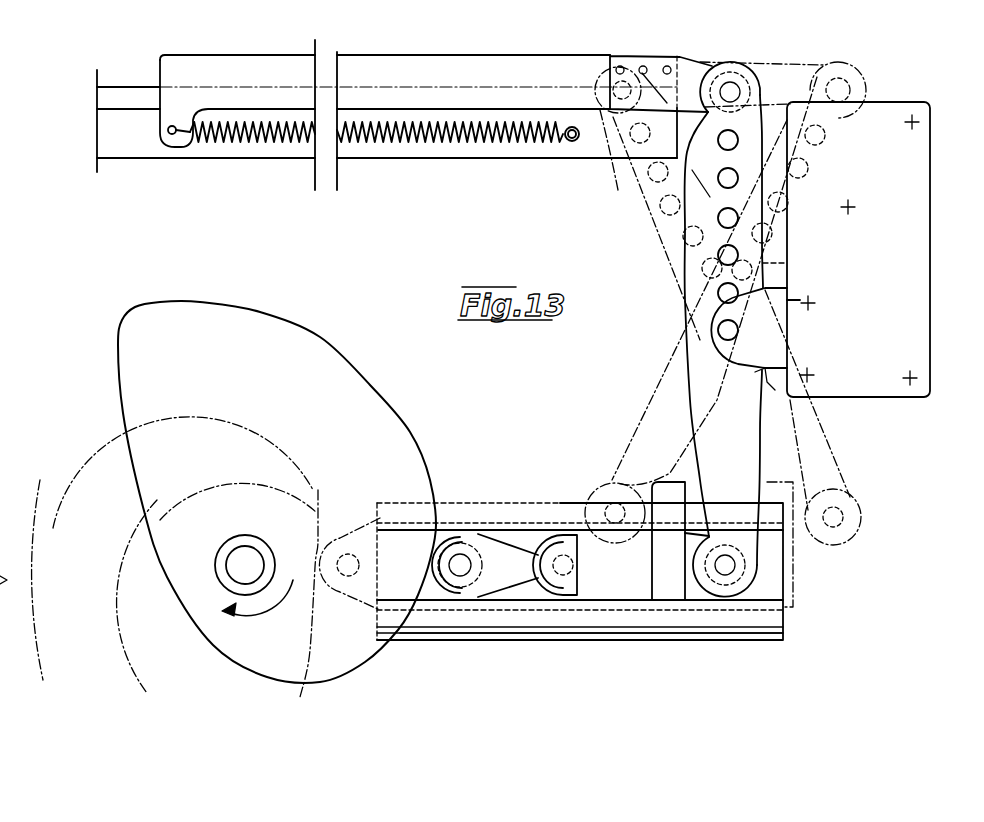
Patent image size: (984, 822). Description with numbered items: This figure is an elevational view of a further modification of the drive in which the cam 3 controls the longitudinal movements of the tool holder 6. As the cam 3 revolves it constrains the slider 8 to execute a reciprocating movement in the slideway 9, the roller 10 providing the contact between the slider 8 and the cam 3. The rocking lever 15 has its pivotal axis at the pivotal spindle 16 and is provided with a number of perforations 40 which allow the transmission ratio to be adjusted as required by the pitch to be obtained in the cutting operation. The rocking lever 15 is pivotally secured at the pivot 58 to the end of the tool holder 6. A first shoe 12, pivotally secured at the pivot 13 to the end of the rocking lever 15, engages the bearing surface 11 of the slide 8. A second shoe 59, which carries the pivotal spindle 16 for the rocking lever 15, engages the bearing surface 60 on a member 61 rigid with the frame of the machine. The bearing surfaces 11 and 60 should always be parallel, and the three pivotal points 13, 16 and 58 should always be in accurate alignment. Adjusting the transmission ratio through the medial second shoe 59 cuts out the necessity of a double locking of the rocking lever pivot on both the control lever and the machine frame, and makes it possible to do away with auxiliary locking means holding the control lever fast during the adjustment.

The cam 3 is at (338, 380).
The tool holder 6 is at (688, 93).
The slider 8 is at (618, 583).
The slideway 9 is at (473, 512).
The roller 10 is at (443, 587).
The bearing surface 11 is at (682, 565).
The first shoe 12 is at (697, 587).
The pivot 13 is at (730, 567).
The rocking lever 15 is at (742, 472).
The pivotal spindle 16 is at (727, 328).
The perforations 40 is at (727, 217).
The pivot 58 is at (733, 91).
The second shoe 59 is at (770, 385).
The bearing surface 60 is at (790, 298).
The member 61 is at (917, 345).